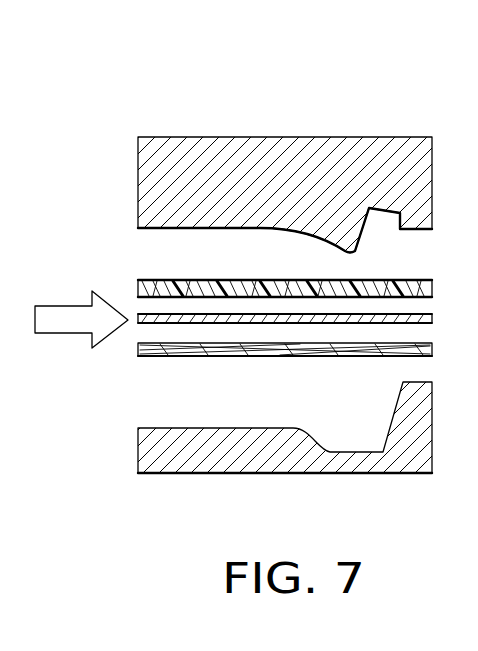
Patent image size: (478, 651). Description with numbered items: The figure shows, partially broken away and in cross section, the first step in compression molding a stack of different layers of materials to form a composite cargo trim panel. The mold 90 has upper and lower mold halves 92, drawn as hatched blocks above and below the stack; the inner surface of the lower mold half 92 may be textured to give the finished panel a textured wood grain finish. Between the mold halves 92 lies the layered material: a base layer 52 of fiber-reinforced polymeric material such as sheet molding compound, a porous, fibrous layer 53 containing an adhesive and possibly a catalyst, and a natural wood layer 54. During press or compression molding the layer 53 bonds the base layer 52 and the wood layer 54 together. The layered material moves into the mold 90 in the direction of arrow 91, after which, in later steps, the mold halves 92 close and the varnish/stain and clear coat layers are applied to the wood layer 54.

The mold 90 is at (263, 84).
The arrow 91 is at (73, 334).
The mold halves 92 is at (375, 137).
The base layer 52 is at (407, 279).
The porous fibrous layer 53 is at (407, 313).
The natural wood layer 54 is at (407, 342).